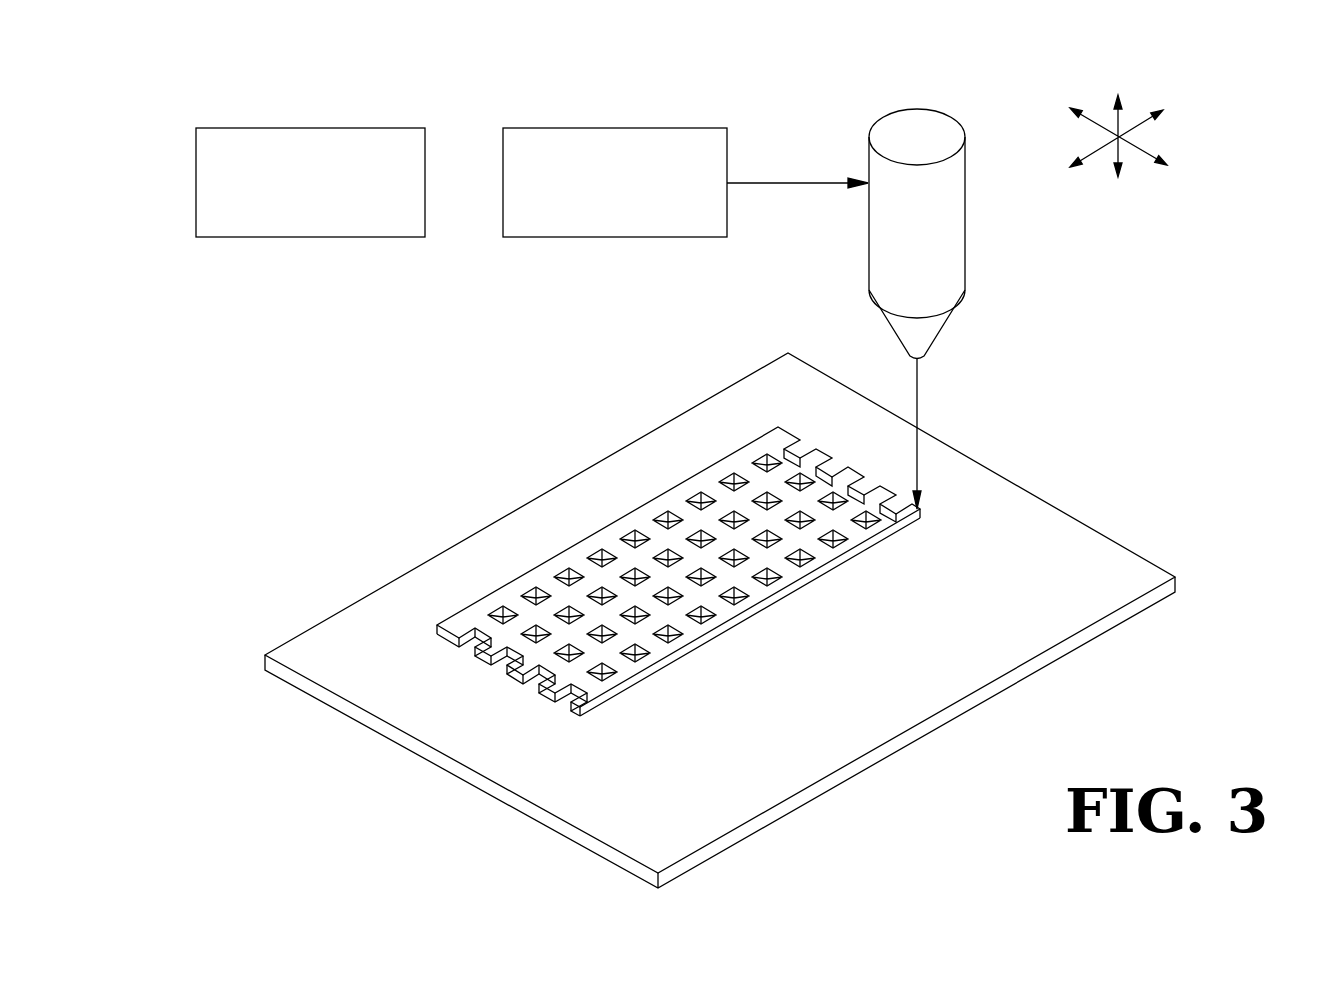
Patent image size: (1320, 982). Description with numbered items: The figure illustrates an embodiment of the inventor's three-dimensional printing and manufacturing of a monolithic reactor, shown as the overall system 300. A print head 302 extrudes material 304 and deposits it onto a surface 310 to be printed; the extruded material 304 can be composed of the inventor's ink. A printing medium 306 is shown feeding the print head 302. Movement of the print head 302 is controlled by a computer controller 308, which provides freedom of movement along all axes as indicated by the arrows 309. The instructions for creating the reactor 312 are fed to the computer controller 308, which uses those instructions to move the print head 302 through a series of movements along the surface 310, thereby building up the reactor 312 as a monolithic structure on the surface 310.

The printing system 300 is at (1197, 67).
The print head 302 is at (965, 265).
The extruded material 304 is at (922, 408).
The printing medium 306 is at (642, 128).
The computer controller 308 is at (337, 128).
The arrows 309 is at (1148, 148).
The surface 310 is at (1094, 602).
The reactor 312 is at (750, 597).